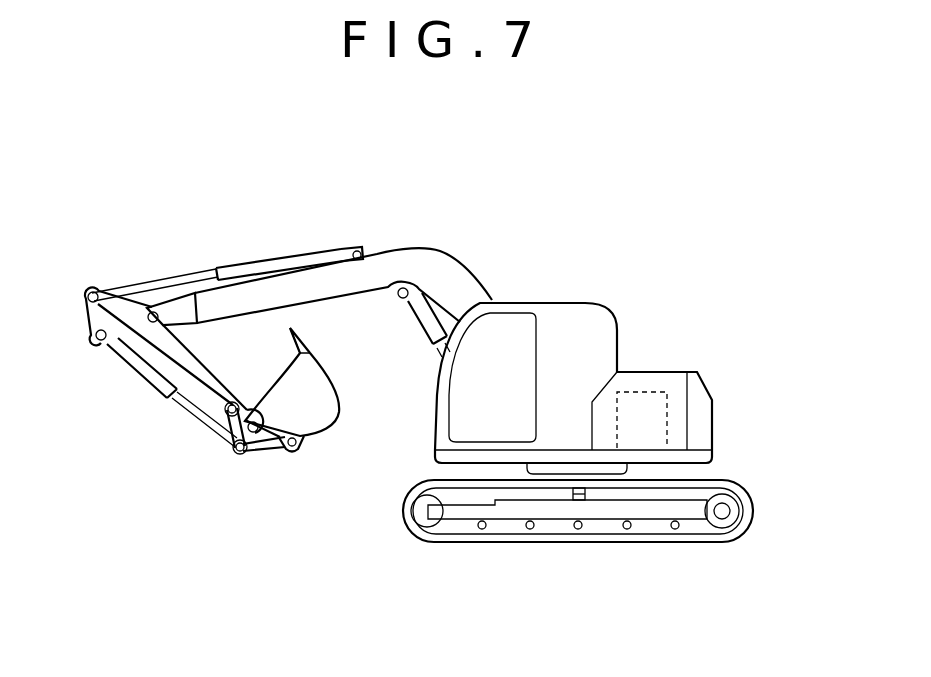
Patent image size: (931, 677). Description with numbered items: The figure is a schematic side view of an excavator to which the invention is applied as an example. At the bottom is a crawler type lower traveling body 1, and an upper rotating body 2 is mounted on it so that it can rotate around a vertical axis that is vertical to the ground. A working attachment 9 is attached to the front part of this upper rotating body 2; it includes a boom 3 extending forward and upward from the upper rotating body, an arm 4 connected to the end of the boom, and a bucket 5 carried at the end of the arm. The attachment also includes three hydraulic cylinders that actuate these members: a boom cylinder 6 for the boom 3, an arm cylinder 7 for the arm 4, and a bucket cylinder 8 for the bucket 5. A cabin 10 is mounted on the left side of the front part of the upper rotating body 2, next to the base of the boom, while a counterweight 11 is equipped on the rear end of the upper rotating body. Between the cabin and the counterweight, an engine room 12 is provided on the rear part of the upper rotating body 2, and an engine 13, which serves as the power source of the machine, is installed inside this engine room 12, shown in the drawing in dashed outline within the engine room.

The lower traveling body 1 is at (571, 545).
The upper rotating body 2 is at (557, 295).
The boom 3 is at (442, 262).
The arm 4 is at (153, 347).
The bucket 5 is at (340, 413).
The boom cylinder 6 is at (425, 328).
The arm cylinder 7 is at (273, 268).
The bucket cylinder 8 is at (153, 381).
The working attachment 9 is at (393, 232).
The cabin 10 is at (598, 333).
The counterweight 11 is at (714, 427).
The engine room 12 is at (679, 371).
The engine 13 is at (668, 406).